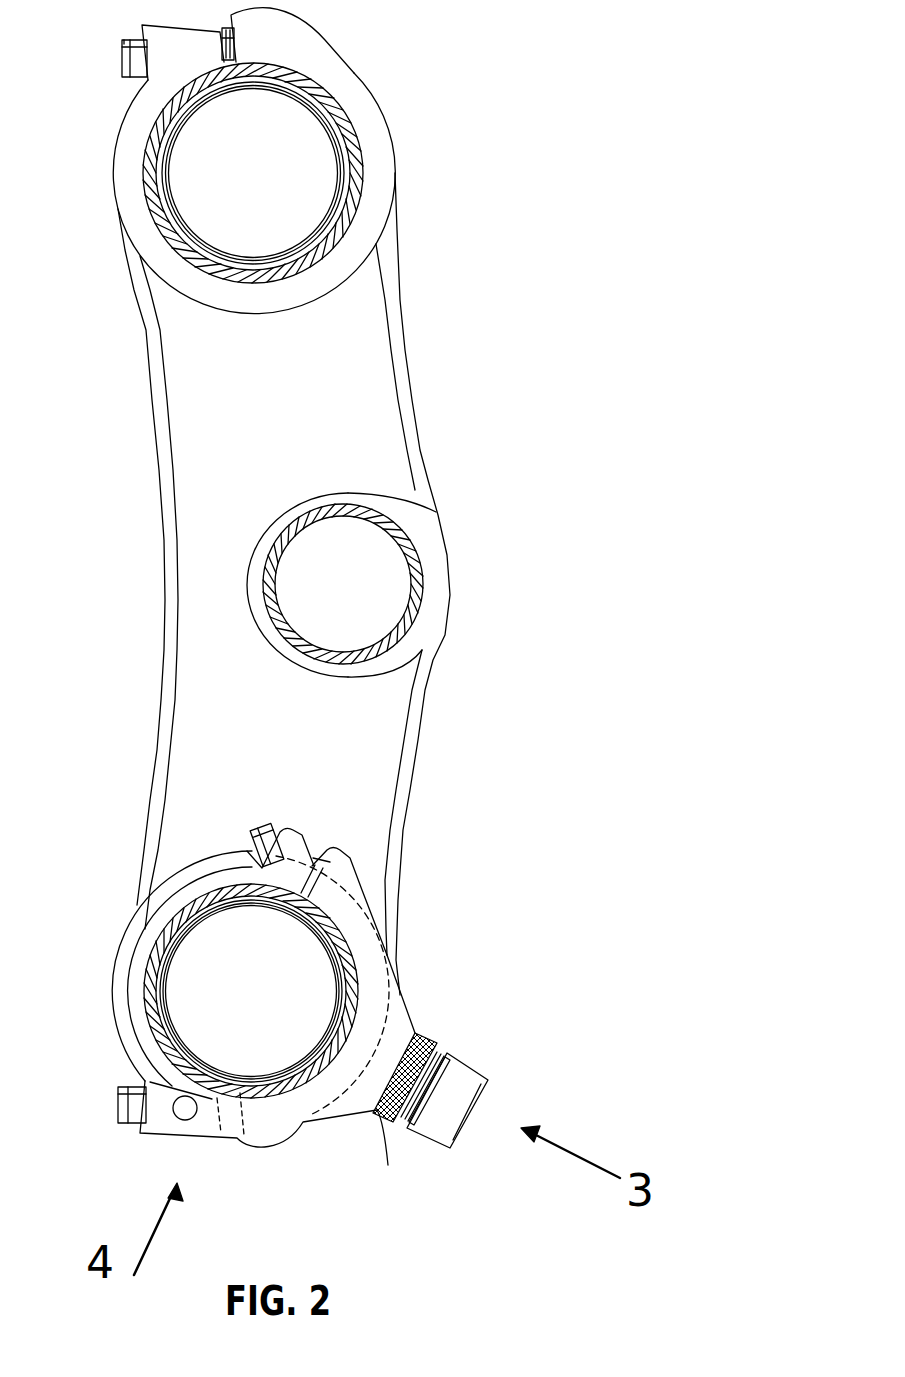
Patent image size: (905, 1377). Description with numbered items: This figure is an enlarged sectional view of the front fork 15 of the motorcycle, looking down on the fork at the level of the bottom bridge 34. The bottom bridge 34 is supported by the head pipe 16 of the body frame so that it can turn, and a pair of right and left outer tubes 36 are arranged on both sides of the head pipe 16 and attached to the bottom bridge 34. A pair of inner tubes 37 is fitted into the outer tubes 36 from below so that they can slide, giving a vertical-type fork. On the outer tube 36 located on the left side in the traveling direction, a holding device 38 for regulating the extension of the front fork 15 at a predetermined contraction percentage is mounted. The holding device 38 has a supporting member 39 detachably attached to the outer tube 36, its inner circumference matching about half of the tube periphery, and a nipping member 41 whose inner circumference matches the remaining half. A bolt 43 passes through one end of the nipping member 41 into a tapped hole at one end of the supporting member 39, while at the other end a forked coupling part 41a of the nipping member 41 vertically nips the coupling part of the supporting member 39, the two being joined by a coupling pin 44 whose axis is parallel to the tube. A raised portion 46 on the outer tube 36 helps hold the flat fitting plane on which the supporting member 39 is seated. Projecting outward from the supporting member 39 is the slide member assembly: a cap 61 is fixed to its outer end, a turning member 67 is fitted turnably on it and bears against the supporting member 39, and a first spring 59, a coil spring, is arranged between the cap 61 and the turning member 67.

The front fork 15 is at (422, 422).
The head pipe 16 is at (392, 528).
The bottom bridge 34 is at (193, 725).
The outer tube 36 is at (330, 110).
The inner tube 37 is at (160, 235).
The holding device 38 is at (333, 1119).
The supporting member 39 is at (408, 1018).
The nipping member 41 is at (178, 890).
The forked coupling part 41a is at (170, 1135).
The bolt 43 is at (257, 838).
The coupling pin 44 is at (185, 1118).
The raised portion 46 is at (202, 885).
The first spring 59 is at (433, 1053).
The cap 61 is at (463, 1078).
The turning member 67 is at (382, 1115).